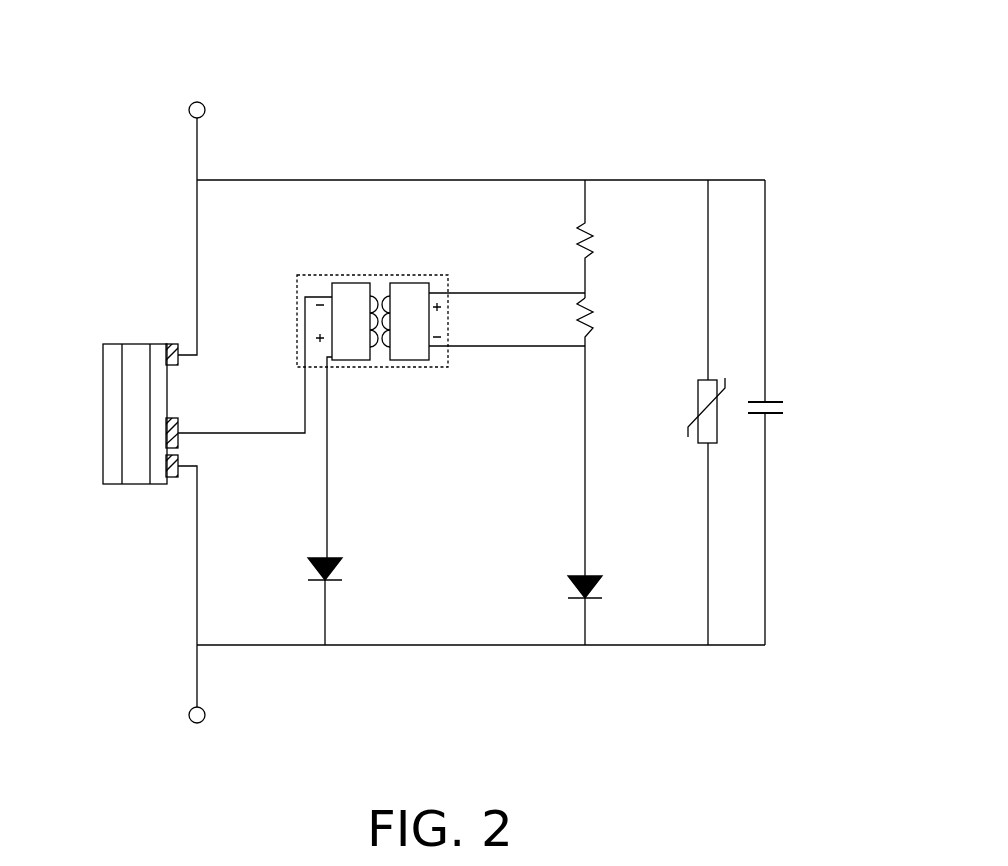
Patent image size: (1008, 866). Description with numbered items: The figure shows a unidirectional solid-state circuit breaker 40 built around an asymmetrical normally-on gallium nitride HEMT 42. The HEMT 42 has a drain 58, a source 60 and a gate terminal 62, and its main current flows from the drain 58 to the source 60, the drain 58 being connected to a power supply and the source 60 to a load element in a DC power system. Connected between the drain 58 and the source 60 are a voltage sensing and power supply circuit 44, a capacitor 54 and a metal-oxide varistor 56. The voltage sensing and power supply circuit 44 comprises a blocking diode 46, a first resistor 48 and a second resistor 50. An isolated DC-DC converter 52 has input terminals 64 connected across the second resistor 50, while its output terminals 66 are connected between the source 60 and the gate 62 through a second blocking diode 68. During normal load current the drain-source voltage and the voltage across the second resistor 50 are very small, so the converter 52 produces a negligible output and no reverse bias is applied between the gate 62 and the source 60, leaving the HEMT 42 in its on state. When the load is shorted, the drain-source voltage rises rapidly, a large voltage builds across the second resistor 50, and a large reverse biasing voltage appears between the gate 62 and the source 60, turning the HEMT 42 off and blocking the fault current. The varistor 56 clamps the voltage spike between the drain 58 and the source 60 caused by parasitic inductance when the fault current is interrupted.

The unidirectional solid-state circuit breaker 40 is at (600, 79).
The normally-on asymmetric semiconductor HEMT 42 is at (103, 372).
The voltage sensing and power supply circuit 44 is at (660, 131).
The blocking diode 46 is at (588, 578).
The first resistor 48 is at (586, 226).
The second resistor 50 is at (586, 302).
The isolated DC-DC converter 52 is at (433, 276).
The capacitor 54 is at (766, 401).
The metal-oxide varistor 56 is at (709, 381).
The drain 58 is at (170, 350).
The source 60 is at (178, 480).
The gate terminal 62 is at (178, 419).
The input terminals 64 is at (446, 296).
The output terminals 66 is at (328, 358).
The second blocking diode 68 is at (332, 560).